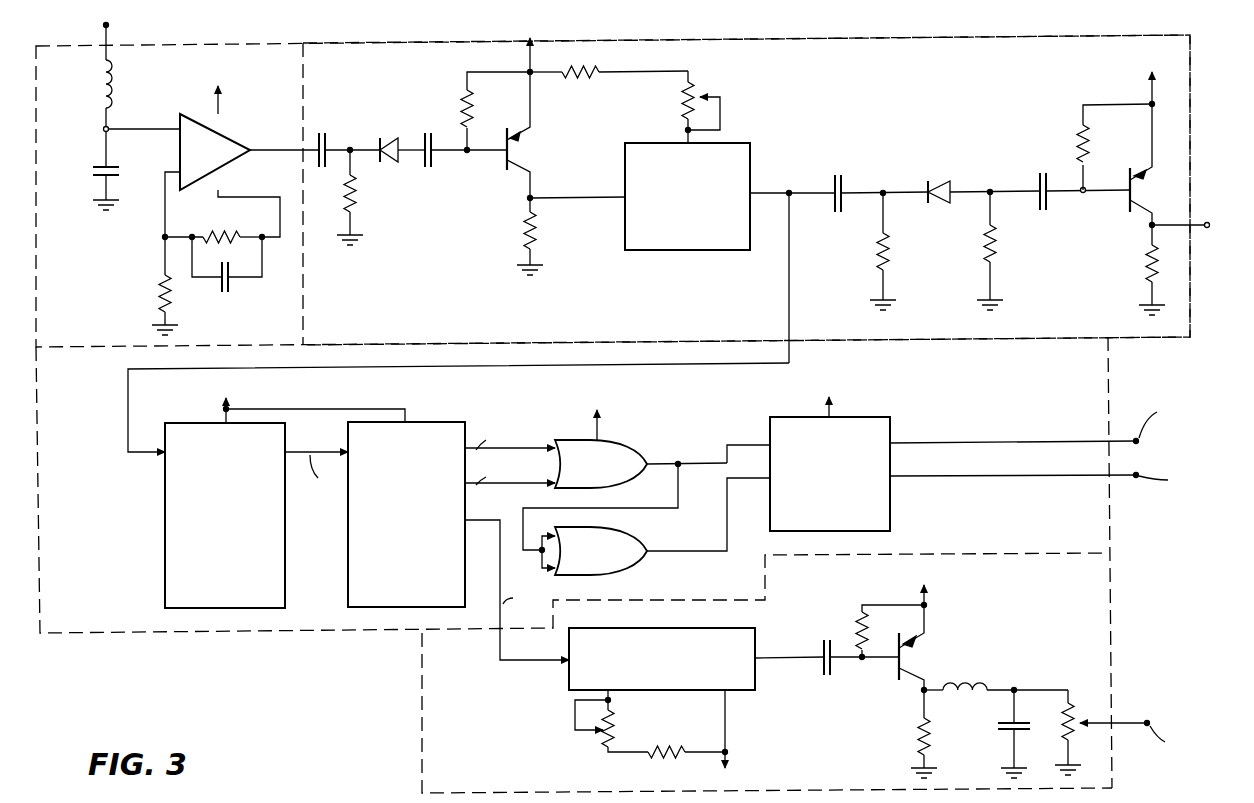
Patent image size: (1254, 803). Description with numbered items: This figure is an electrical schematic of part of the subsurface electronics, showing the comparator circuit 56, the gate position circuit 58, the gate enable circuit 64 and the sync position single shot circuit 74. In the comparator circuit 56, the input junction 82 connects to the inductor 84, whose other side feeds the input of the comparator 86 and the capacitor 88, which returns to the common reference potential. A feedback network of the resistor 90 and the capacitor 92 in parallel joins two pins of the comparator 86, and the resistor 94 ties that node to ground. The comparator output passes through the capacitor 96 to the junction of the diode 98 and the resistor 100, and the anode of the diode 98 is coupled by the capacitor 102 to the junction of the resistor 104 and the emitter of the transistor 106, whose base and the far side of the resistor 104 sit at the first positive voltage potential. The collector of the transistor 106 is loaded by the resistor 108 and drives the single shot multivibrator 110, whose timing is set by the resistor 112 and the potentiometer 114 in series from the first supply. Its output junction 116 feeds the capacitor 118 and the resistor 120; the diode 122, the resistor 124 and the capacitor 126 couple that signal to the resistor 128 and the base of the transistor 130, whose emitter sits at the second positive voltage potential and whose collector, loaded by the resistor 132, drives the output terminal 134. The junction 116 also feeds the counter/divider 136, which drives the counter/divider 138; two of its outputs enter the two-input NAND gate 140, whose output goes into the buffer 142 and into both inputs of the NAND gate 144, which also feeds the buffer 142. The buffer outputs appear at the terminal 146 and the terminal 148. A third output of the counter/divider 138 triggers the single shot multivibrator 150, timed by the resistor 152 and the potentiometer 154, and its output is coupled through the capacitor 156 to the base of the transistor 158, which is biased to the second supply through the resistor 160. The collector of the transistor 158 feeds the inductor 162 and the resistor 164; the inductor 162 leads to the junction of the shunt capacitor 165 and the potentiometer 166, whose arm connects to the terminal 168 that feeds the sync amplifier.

The comparator circuit 56 is at (202, 45).
The gate position circuit 58 is at (903, 36).
The gate enable circuit 64 is at (160, 634).
The sync position single shot circuit 74 is at (422, 711).
The input junction 82 is at (108, 25).
The inductor 84 is at (100, 92).
The comparator 86 is at (228, 138).
The capacitor 88 is at (95, 172).
The resistor 90 is at (212, 232).
The capacitor 92 is at (230, 286).
The resistor 94 is at (158, 292).
The capacitor 96 is at (322, 133).
The diode 98 is at (386, 135).
The resistor 100 is at (360, 205).
The capacitor 102 is at (436, 168).
The resistor 104 is at (460, 100).
The transistor 106 is at (526, 144).
The resistor 108 is at (522, 234).
The single shot multivibrator 110 is at (690, 252).
The resistor 112 is at (590, 80).
The potentiometer 114 is at (700, 86).
The junction 116 is at (788, 190).
The capacitor 118 is at (832, 178).
The resistor 120 is at (878, 253).
The diode 122 is at (940, 180).
The resistor 124 is at (985, 248).
The capacitor 126 is at (1038, 178).
The resistor 128 is at (1074, 134).
The transistor 130 is at (1123, 210).
The resistor 132 is at (1145, 266).
The output terminal 134 is at (1210, 227).
The counter/divider 136 is at (165, 527).
The counter/divider 138 is at (348, 527).
The two-input NAND gate 140 is at (632, 442).
The buffer 142 is at (893, 430).
The two-input NAND gate 144 is at (638, 531).
The terminal 146 is at (1139, 442).
The terminal 148 is at (1138, 478).
The single shot multivibrator 150 is at (757, 690).
The resistor 152 is at (655, 745).
The potentiometer 154 is at (596, 738).
The capacitor 156 is at (832, 672).
The transistor 158 is at (914, 654).
The resistor 160 is at (856, 622).
The inductor 162 is at (974, 686).
The resistor 164 is at (918, 738).
The capacitor 165 is at (1008, 740).
The potentiometer 166 is at (1076, 702).
The terminal 168 is at (1150, 720).